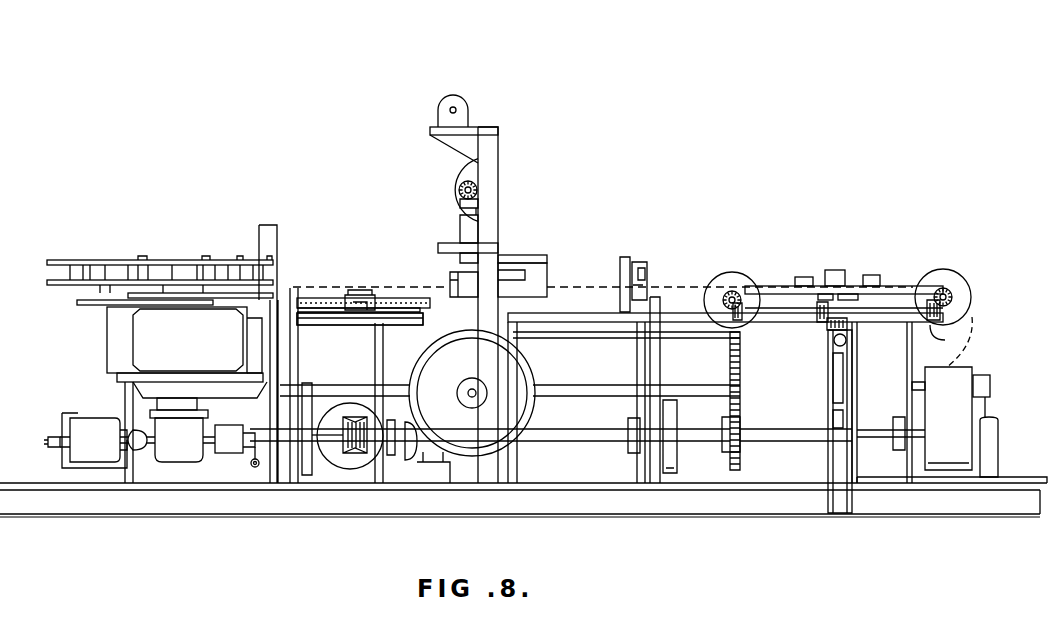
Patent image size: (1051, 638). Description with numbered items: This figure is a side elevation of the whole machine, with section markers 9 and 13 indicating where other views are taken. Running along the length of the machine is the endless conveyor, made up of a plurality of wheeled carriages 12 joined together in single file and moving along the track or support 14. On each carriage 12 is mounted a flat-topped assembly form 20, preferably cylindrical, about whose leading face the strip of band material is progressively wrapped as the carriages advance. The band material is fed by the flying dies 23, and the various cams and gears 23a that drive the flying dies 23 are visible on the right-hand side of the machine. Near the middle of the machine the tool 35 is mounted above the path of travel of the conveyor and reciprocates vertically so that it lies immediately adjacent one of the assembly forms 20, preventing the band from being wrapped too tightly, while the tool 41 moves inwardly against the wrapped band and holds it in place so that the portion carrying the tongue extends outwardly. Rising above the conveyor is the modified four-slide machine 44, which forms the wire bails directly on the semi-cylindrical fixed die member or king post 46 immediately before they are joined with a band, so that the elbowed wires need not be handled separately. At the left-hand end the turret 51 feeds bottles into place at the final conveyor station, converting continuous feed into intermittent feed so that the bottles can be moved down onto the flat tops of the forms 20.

The section line 9- 9 is at (430, 78).
The section line 13- 13 is at (677, 242).
The turret 51 is at (181, 259).
The modified four-slide machine 44 is at (503, 157).
The king post 46 is at (448, 278).
The assembly form 20 is at (356, 290).
The wheeled carriage 12 is at (373, 294).
The track 14 is at (358, 325).
The tool 35 is at (648, 264).
The tool 41 is at (650, 278).
The flying dies 23 is at (852, 266).
The cams and gears of the flying dies 23a is at (745, 266).